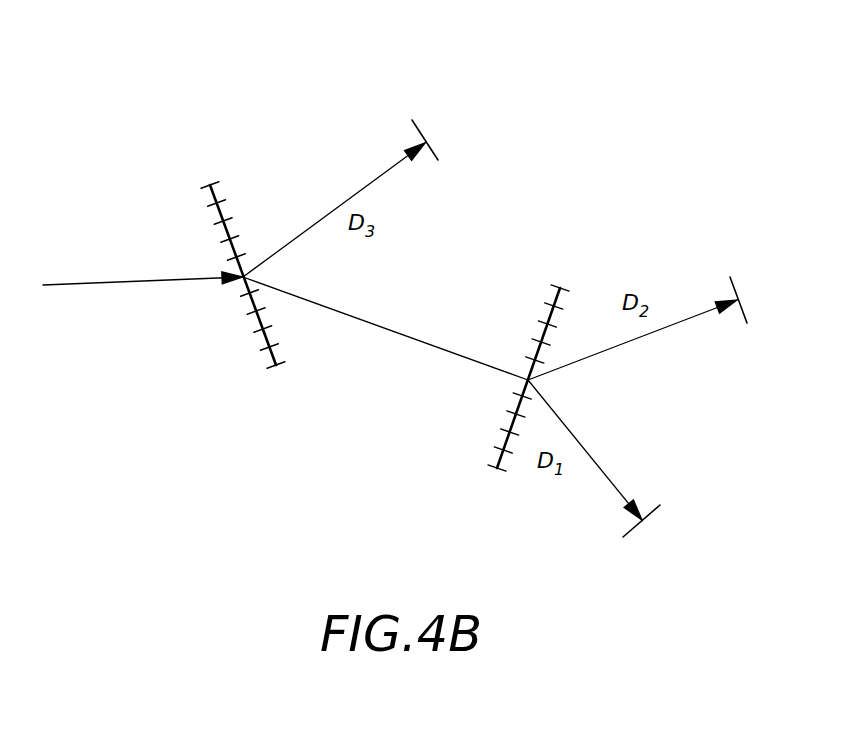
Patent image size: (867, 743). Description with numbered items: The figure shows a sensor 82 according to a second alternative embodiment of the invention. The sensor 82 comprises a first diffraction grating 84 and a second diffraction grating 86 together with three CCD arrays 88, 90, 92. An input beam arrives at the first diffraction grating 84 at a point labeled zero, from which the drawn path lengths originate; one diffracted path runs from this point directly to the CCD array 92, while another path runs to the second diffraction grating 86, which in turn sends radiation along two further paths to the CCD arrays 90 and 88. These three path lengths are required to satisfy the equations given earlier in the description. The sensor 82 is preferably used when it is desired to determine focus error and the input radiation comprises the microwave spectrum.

The sensor 82 is at (180, 402).
The first diffraction grating 84 is at (212, 185).
The second diffraction grating 86 is at (498, 468).
The CCD array 88 is at (648, 508).
The CCD array 90 is at (733, 290).
The CCD array 92 is at (415, 132).